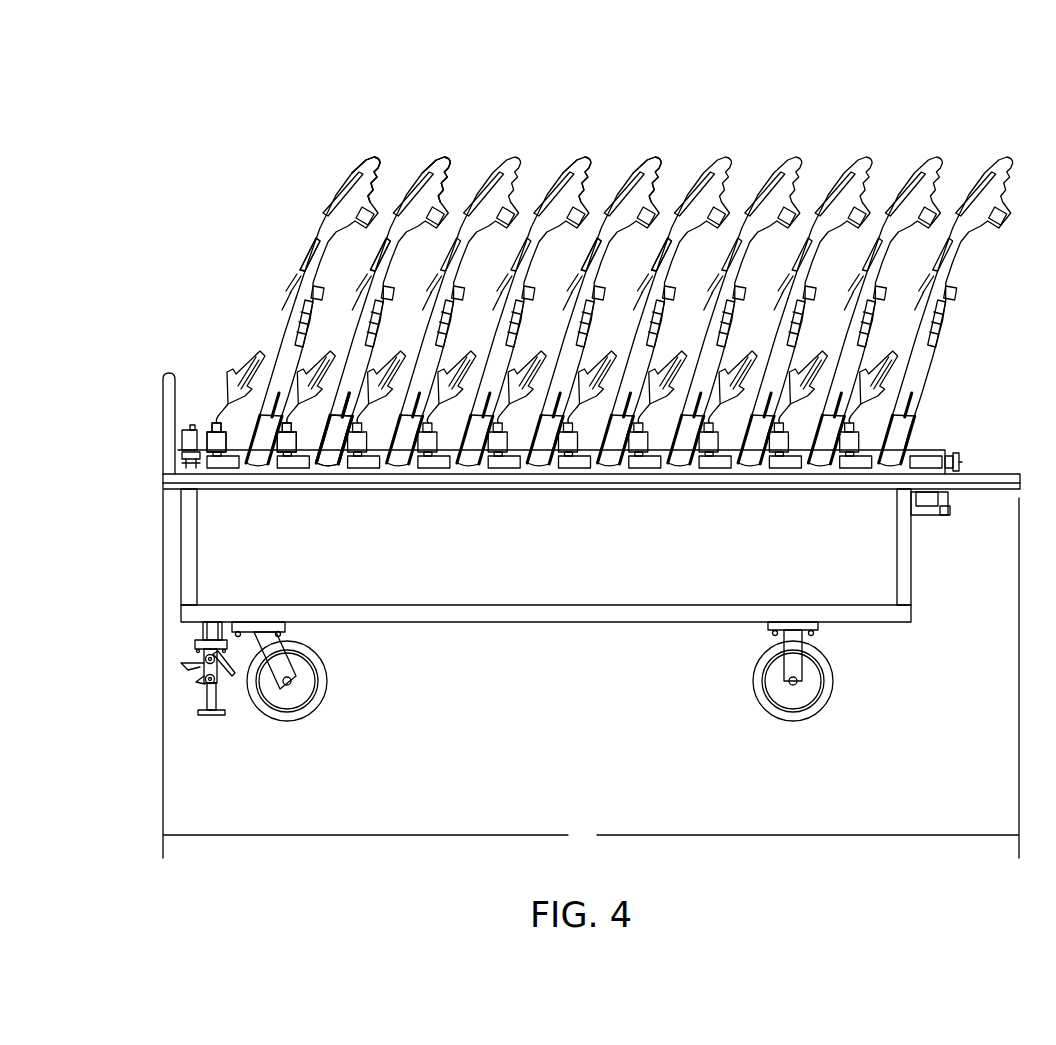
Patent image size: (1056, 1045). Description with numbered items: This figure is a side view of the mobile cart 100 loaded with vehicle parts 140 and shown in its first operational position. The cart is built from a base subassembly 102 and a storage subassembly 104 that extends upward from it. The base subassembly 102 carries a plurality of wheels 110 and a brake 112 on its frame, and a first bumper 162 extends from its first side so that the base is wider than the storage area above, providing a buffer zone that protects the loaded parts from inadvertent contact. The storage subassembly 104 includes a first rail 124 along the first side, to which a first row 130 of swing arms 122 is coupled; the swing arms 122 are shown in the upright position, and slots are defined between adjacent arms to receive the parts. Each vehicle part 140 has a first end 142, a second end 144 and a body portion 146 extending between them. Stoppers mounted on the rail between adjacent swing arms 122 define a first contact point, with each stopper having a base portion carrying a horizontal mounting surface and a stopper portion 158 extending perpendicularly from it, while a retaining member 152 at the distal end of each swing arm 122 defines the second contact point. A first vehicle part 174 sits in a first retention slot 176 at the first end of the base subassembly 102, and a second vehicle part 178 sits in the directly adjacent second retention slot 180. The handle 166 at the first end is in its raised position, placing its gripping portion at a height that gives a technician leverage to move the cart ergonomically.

The mobile cart 100 is at (938, 100).
The base subassembly 102 is at (126, 597).
The storage subassembly 104 is at (160, 317).
The wheels 110 is at (307, 716).
The brake 112 is at (192, 667).
The swing arms 122 is at (928, 348).
The first rail 124 is at (961, 458).
The first row 130 is at (307, 203).
The vehicle part 140 is at (392, 133).
The first end 142 is at (218, 424).
The second end 144 is at (378, 160).
The body portion 146 is at (302, 243).
The retaining member 152 is at (737, 295).
The stopper portion 158 is at (205, 423).
The first bumper 162 is at (490, 490).
The handle 166 is at (133, 420).
The first vehicle part 174 is at (331, 159).
The first retention slot 176 is at (244, 314).
The second vehicle part 178 is at (469, 162).
The second retention slot 180 is at (322, 431).